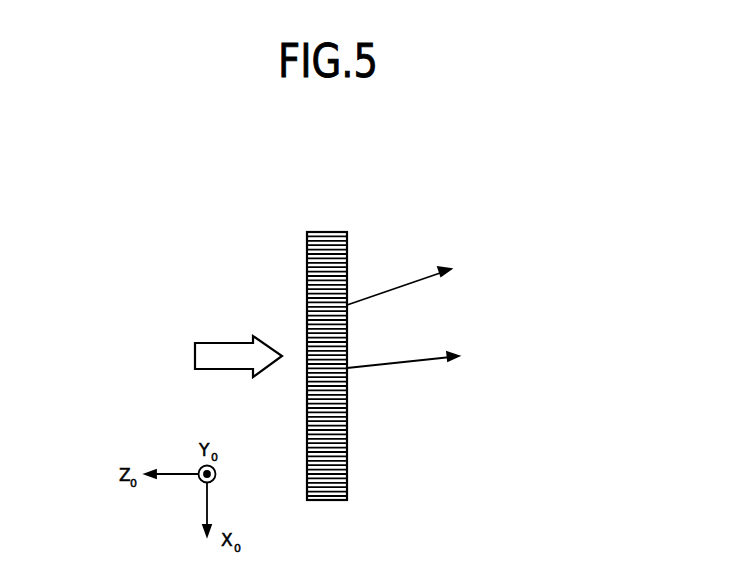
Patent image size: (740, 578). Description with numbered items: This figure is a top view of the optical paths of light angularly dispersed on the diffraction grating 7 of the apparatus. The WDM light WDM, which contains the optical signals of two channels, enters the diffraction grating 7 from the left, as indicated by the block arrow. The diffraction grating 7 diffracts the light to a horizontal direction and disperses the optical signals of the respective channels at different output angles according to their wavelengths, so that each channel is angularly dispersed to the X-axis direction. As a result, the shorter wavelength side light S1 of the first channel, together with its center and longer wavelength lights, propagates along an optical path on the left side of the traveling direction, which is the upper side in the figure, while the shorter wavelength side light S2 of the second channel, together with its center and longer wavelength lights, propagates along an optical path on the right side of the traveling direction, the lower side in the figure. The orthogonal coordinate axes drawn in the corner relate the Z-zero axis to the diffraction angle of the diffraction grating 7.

The diffraction grating 7 is at (328, 232).
The WDM light WDM is at (229, 330).
The shorter wavelength side light of channel Ch1 S1 is at (443, 277).
The shorter wavelength side light of channel Ch2 S2 is at (451, 355).